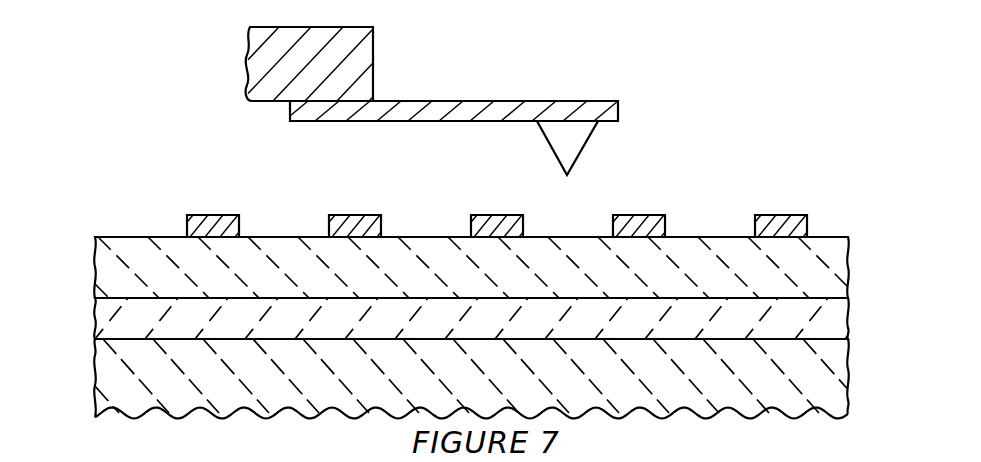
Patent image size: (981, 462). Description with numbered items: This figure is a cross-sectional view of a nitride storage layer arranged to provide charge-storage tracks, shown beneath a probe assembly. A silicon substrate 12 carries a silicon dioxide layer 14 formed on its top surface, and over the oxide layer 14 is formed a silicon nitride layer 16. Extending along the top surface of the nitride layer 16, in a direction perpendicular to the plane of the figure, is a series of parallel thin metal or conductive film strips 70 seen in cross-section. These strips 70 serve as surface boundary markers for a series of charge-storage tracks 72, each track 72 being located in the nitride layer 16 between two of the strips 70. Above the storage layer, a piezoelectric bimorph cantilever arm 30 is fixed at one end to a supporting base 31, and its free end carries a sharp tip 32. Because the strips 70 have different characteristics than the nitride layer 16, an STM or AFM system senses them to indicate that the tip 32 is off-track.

The silicon substrate 12 is at (92, 374).
The silicon dioxide layer 14 is at (92, 313).
The silicon nitride layer 16 is at (92, 264).
The piezoelectric bimorph cantilever arm 30 is at (583, 101).
The supporting base 31 is at (373, 45).
The sharp tip 32 is at (583, 150).
The metal or conductive film strips 70 is at (771, 215).
The charge-storage tracks 72 is at (686, 245).